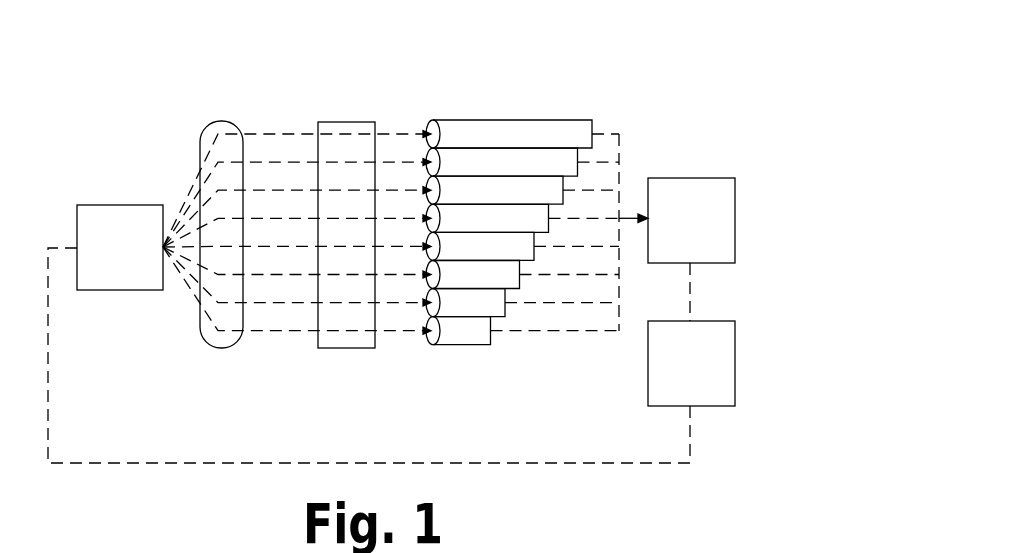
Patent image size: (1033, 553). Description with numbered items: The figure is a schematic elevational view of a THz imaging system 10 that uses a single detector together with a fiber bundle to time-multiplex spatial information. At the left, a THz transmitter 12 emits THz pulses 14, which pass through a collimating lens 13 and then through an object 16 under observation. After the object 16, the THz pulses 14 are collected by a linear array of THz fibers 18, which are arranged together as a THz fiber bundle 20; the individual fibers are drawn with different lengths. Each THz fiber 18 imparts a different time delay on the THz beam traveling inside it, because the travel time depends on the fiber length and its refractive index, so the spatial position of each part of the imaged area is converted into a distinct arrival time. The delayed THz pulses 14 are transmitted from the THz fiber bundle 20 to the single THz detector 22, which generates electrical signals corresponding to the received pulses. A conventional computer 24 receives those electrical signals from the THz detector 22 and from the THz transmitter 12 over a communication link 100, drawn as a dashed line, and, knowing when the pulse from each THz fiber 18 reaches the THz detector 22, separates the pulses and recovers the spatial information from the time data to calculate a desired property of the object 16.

The THz imaging system 10 is at (567, 91).
The THz transmitter 12 is at (105, 205).
The collimating lens 13 is at (222, 120).
The THz pulses 14 is at (272, 334).
The object 16 is at (345, 348).
The THz fiber 18 is at (458, 312).
The THz fiber bundle 20 is at (507, 217).
The THz detector 22 is at (678, 178).
The computer 24 is at (700, 406).
The communication link 100 is at (693, 291).